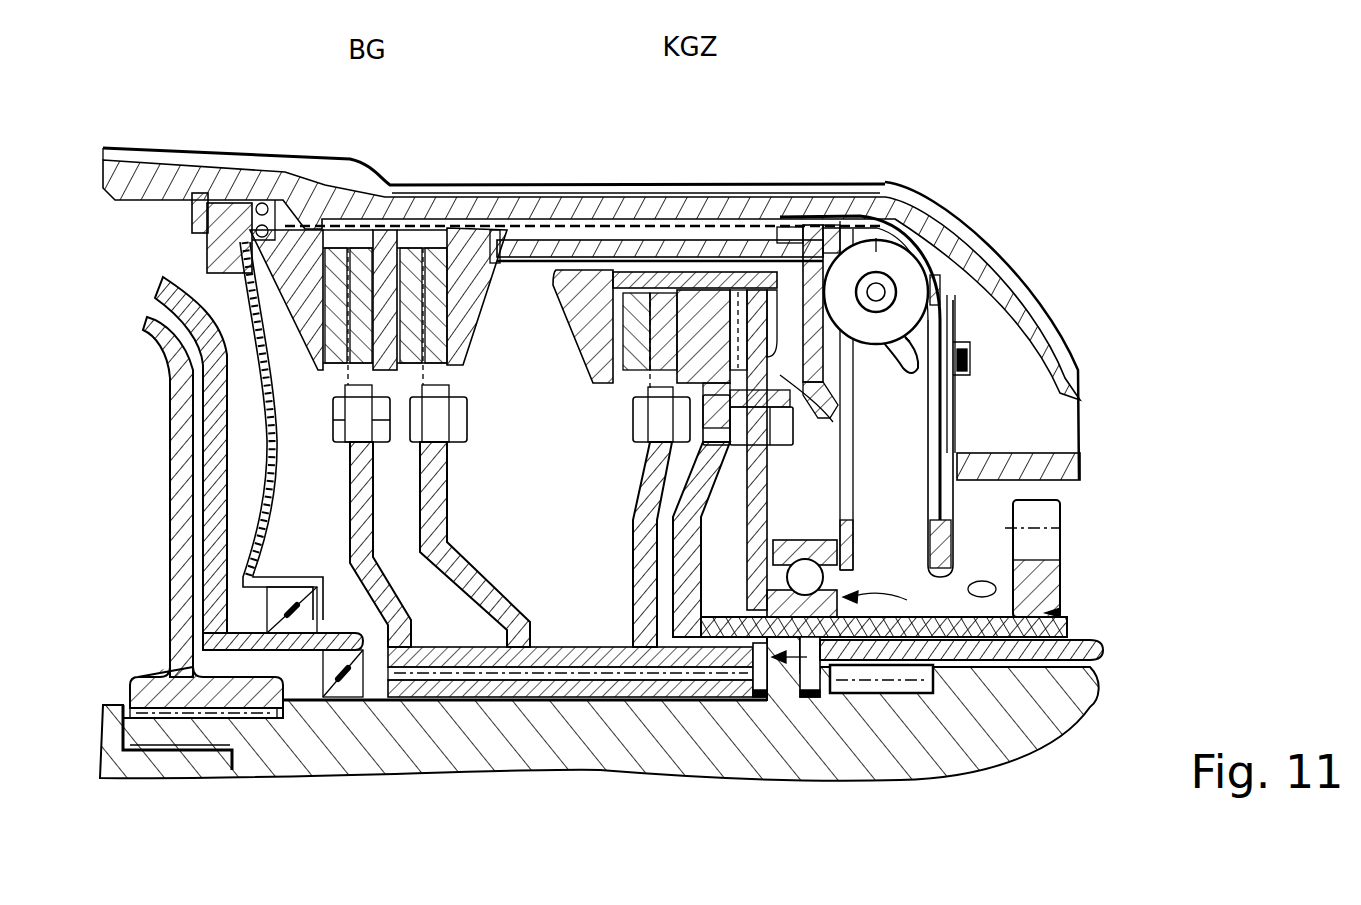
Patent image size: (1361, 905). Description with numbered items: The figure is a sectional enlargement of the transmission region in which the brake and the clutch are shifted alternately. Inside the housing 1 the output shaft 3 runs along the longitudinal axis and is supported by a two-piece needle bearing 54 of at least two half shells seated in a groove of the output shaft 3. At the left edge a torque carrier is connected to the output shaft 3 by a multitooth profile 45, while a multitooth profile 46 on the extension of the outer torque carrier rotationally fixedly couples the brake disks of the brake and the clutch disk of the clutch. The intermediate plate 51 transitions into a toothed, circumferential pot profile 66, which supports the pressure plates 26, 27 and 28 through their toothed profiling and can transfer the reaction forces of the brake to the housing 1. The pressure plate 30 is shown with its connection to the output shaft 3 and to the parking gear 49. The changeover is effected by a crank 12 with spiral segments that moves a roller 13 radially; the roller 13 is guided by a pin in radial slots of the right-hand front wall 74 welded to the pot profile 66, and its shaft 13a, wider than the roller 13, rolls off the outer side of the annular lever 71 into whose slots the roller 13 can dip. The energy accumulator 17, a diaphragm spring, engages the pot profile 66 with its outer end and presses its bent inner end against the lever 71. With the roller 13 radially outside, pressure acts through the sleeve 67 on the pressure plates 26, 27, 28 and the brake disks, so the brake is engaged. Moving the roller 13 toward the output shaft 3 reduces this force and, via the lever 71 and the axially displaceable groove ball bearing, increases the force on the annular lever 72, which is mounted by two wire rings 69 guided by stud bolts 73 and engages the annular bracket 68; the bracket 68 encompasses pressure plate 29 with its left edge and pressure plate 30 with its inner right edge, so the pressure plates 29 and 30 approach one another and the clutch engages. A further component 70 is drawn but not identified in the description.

The housing 1 is at (1027, 303).
The output shaft 3 is at (760, 737).
The crank 12 is at (963, 403).
The roller 13 is at (888, 215).
The shaft 13a is at (883, 270).
The energy accumulator 17 is at (797, 290).
The pressure plate 26 is at (300, 212).
The pressure plate 27 is at (385, 248).
The pressure plate 28 is at (478, 235).
The pressure plate 29 is at (575, 229).
The pressure plate 30 is at (690, 290).
The multitooth profile 45 is at (263, 723).
The multitooth profile 46 is at (655, 690).
The parking gear 49 is at (1053, 537).
The intermediate plate 51 is at (263, 377).
The needle bearing 54 is at (167, 745).
The pot profile 66 is at (602, 232).
The sleeve 67 is at (555, 243).
The bracket 68 is at (730, 290).
The wire rings 69 is at (858, 409).
The shaft 70 is at (1003, 703).
The annular lever 71 is at (850, 452).
The annular lever 72 is at (755, 512).
The stud bolts 73 is at (790, 447).
The front wall 74 is at (950, 303).